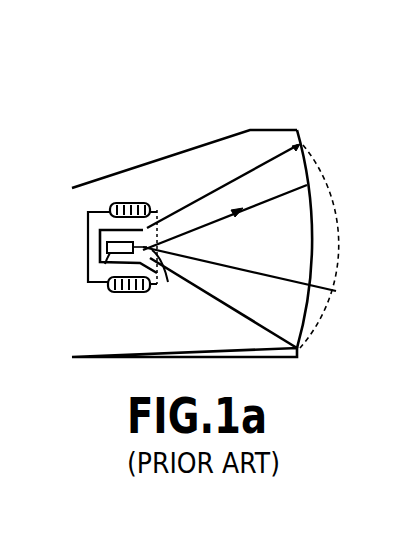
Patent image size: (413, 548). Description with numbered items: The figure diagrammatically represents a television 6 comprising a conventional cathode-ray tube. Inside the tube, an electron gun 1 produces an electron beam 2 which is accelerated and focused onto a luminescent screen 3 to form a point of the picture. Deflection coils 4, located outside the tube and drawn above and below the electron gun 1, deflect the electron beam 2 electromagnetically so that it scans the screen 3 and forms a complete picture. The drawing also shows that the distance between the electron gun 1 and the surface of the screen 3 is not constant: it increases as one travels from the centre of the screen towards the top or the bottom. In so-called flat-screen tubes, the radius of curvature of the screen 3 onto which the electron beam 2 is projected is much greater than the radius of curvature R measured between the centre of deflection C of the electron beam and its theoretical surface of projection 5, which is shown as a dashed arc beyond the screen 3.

The electron gun 1 is at (108, 268).
The electron beam 2 is at (262, 197).
The luminescent screen 3 is at (317, 165).
The deflection coils 4 is at (123, 202).
The theoretical surface of projection 5 is at (328, 315).
The television 6 is at (177, 154).
The centre of deflection C is at (160, 262).
The radius of curvature R is at (239, 269).